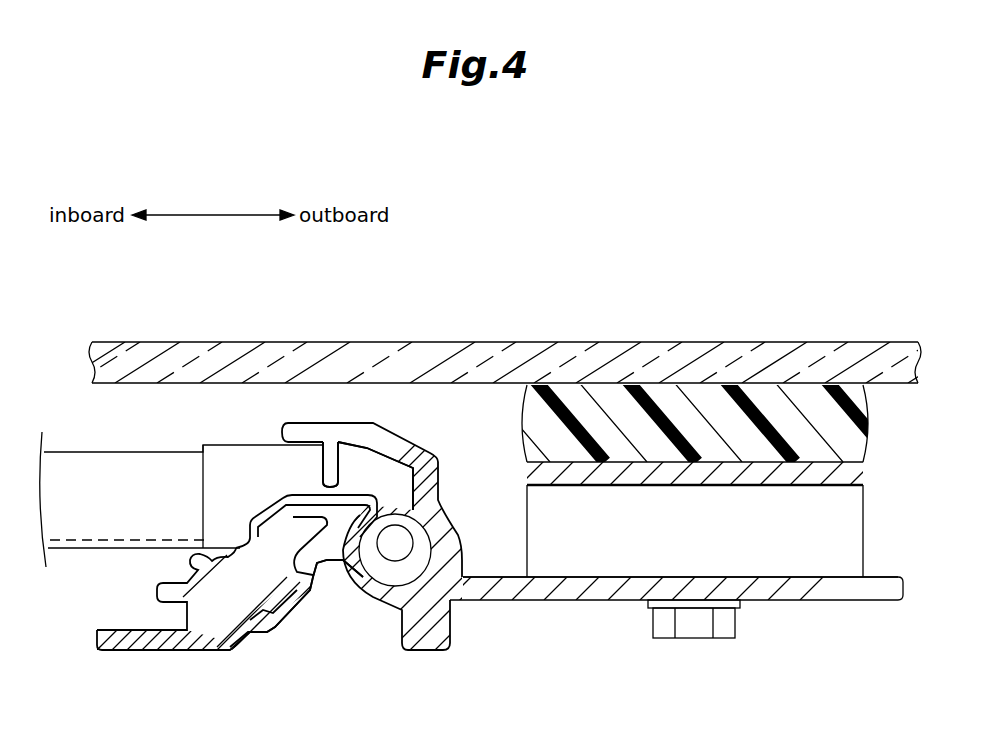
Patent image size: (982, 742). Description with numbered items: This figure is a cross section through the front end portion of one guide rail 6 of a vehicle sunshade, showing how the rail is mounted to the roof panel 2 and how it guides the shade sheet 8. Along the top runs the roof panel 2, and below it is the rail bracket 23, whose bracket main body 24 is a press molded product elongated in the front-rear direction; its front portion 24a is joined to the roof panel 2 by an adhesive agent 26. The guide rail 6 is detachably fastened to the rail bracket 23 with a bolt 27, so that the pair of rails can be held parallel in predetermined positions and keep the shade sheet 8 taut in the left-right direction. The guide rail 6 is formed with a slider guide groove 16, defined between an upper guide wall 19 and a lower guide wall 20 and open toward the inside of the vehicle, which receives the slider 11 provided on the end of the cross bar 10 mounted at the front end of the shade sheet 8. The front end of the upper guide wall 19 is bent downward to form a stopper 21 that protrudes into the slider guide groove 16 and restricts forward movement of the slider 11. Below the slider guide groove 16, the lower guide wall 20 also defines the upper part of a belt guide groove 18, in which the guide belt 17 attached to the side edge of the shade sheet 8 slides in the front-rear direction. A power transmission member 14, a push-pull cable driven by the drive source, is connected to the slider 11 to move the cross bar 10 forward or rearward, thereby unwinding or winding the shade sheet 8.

The roof panel 2 is at (563, 355).
The guide rail 6 is at (493, 600).
The shade sheet 8 is at (150, 535).
The cross bar 10 is at (85, 560).
The slider 11 is at (213, 485).
The power transmission member 14 is at (392, 552).
The slider guide groove 16 is at (437, 447).
The guide belt 17 is at (295, 590).
The belt guide groove 18 is at (236, 648).
The upper guide wall 19 is at (305, 420).
The lower guide wall 20 is at (277, 520).
The stopper 21 is at (370, 440).
The rail bracket 23 is at (582, 578).
The bracket main body 24 is at (797, 560).
The front portion 24a is at (770, 460).
The adhesive agent 26 is at (705, 400).
The bolt 27 is at (693, 636).